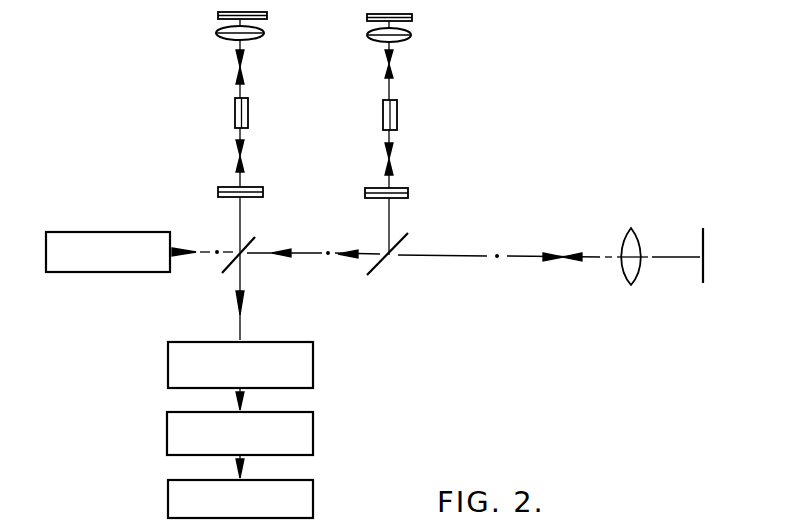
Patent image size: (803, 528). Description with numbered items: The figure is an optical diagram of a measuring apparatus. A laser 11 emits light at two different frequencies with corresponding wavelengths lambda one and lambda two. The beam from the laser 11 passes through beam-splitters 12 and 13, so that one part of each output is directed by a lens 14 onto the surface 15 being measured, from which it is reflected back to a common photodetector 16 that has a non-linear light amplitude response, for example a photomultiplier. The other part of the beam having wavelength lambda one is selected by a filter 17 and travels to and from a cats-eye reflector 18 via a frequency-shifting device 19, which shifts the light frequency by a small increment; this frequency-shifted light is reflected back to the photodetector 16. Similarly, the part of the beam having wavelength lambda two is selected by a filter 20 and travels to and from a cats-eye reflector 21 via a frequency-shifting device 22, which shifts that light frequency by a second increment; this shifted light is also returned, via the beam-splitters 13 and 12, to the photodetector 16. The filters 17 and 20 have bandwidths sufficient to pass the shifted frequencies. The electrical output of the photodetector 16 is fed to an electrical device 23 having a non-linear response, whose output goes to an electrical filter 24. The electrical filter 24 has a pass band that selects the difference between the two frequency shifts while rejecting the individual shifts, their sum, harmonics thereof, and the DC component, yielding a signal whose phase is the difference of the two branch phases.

The laser 11 is at (113, 232).
The beam-splitter 12 is at (255, 237).
The beam-splitter 13 is at (373, 270).
The lens 14 is at (623, 238).
The surface 15 is at (703, 229).
The photodetector 16 is at (314, 358).
The filter 17 is at (258, 190).
The cats-eye reflector 18 is at (258, 30).
The frequency-shifting device 19 is at (236, 118).
The filter 20 is at (405, 190).
The cats-eye reflector 21 is at (407, 33).
The frequency-shifting device 22 is at (383, 110).
The electrical device 23 is at (314, 423).
The electrical filter 24 is at (314, 497).